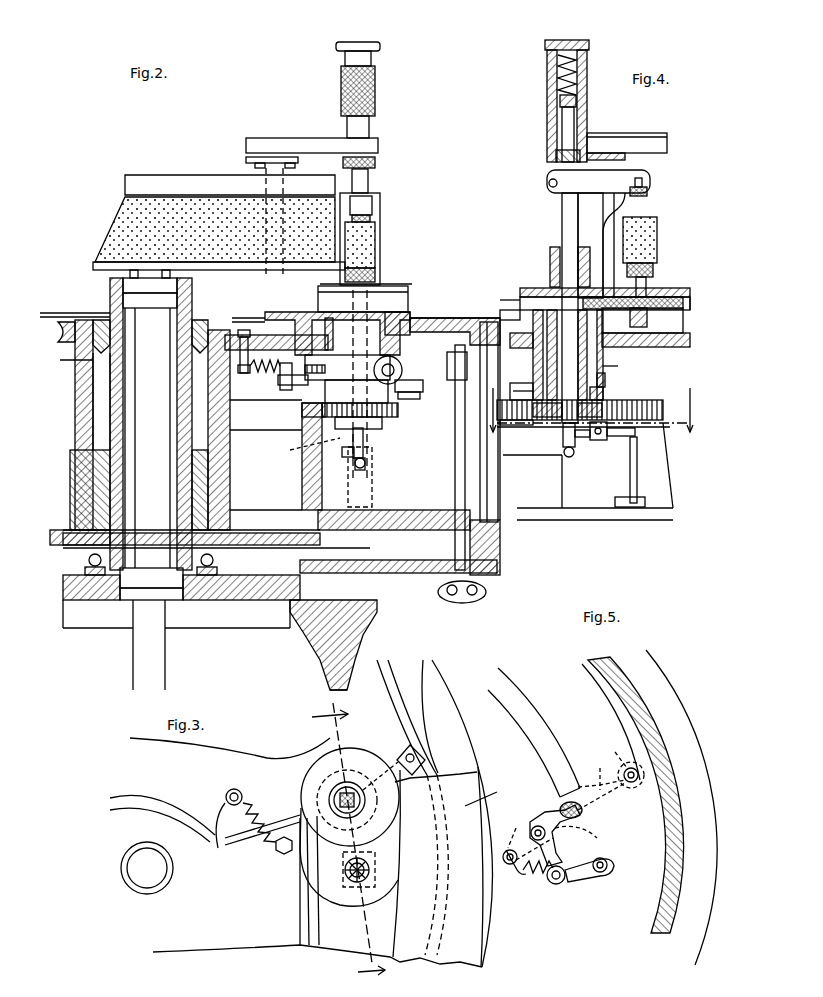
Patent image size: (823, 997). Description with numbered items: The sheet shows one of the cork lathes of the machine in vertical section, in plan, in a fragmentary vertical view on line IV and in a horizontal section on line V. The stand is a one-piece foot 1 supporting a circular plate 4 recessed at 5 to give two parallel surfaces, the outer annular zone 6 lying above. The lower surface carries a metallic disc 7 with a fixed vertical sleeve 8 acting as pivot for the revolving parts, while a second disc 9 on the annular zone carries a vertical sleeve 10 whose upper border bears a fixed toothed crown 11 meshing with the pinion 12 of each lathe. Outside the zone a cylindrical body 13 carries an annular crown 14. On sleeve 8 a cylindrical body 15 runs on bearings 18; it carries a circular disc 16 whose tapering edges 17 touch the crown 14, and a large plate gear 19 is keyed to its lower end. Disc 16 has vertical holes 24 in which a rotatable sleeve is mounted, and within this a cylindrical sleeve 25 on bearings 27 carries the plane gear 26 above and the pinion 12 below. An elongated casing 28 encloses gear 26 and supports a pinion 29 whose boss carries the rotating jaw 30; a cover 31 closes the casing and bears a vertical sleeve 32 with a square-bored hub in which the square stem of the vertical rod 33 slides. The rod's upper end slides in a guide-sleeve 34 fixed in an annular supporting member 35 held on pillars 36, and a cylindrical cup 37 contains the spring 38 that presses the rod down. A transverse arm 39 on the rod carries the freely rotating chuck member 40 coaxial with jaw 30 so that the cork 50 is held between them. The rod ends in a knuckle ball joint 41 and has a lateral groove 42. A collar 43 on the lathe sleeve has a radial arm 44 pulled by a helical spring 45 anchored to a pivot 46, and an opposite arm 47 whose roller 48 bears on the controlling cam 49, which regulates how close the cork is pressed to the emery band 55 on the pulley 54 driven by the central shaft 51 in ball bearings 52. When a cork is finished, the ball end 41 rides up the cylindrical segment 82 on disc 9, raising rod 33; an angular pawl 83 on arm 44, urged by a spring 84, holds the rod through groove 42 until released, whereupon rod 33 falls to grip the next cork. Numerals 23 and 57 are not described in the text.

In FIG. 2, the foot or sock 1 is at (352, 652).
In FIG. 2, the circular plate 4 is at (365, 615).
In FIG. 2, the central recess 5 is at (285, 628).
In FIG. 2, the outer annular zone 6 is at (505, 555).
In FIG. 2, the metallic disc 7 is at (240, 602).
In FIG. 2, the vertical sleeve 8 is at (190, 296).
In FIG. 2, the metallic disc 9 is at (418, 510).
In FIG. 4, the metallic disc 9 is at (602, 512).
In FIG. 2, the vertical sleeve 10 is at (312, 483).
In FIG. 2, the toothed crown 11 is at (275, 424).
In FIG. 4, the toothed crown 11 is at (658, 400).
In FIG. 2, the pinion 12 is at (378, 430).
In FIG. 4, the pinion 12 is at (540, 427).
In FIG. 2, the cylindrical body 13 is at (478, 368).
In FIG. 4, the cylindrical body 13 is at (500, 360).
In FIG. 3, the cylindrical body 13 is at (438, 716).
In FIG. 5, the cylindrical body 13 is at (678, 745).
In FIG. 2, the annular crown 14 is at (490, 305).
In FIG. 4, the annular crown 14 is at (497, 298).
In FIG. 3, the annular crown 14 is at (488, 791).
In FIG. 5, the annular crown 14 is at (478, 803).
In FIG. 2, the cylindrical body 15 is at (78, 427).
In FIG. 2, the circular disc 16 is at (305, 338).
In FIG. 4, the circular disc 16 is at (662, 348).
In FIG. 3, the circular disc 16 is at (168, 762).
In FIG. 2, the tapering edges 17 is at (480, 318).
In FIG. 4, the tapering edges 17 is at (502, 303).
In FIG. 2, the bearings 18 is at (95, 322).
In FIG. 2, the plate gear 19 is at (262, 540).
In FIG. 2, the base plate 23 is at (80, 600).
In FIG. 2, the vertical holes 24 is at (415, 302).
In FIG. 4, the vertical holes 24 is at (545, 340).
In FIG. 4, the cylindrical sleeve 25 is at (605, 378).
In FIG. 4, the plane gear 26 is at (530, 284).
In FIG. 4, the bearings 27 is at (535, 330).
In FIG. 2, the elongated casing 28 is at (410, 308).
In FIG. 4, the elongated casing 28 is at (520, 304).
In FIG. 4, the pinion 29 is at (665, 293).
In FIG. 2, the rotating jaw 30 is at (375, 273).
In FIG. 4, the rotating jaw 30 is at (653, 268).
In FIG. 3, the rotating jaw 30 is at (369, 866).
In FIG. 2, the cover 31 is at (408, 296).
In FIG. 4, the cover 31 is at (690, 290).
In FIG. 3, the cover 31 is at (330, 898).
In FIG. 4, the vertical sleeve 32 is at (552, 258).
In FIG. 3, the vertical sleeve 32 is at (328, 799).
In FIG. 2, the vertical rod 33 is at (368, 182).
In FIG. 4, the vertical rod 33 is at (560, 135).
In FIG. 3, the vertical rod 33 is at (365, 806).
In FIG. 5, the vertical rod 33 is at (582, 813).
In FIG. 2, the guide-sleeve 34 is at (375, 162).
In FIG. 4, the guide-sleeve 34 is at (556, 158).
In FIG. 2, the annular supporting member 35 is at (318, 138).
In FIG. 4, the annular supporting member 35 is at (620, 134).
In FIG. 2, the pillars 36 is at (298, 160).
In FIG. 4, the pillars 36 is at (578, 238).
In FIG. 2, the cylindrical cup 37 is at (376, 88).
In FIG. 4, the cylindrical cup 37 is at (547, 118).
In FIG. 4, the spring 38 is at (556, 68).
In FIG. 2, the transverse arm 39 is at (372, 206).
In FIG. 4, the transverse arm 39 is at (616, 205).
In FIG. 2, the chuck member 40 is at (370, 220).
In FIG. 4, the chuck member 40 is at (648, 192).
In FIG. 2, the knuckle ball joint 41 is at (370, 470).
In FIG. 4, the knuckle ball joint 41 is at (570, 458).
In FIG. 2, the groove 42 is at (342, 452).
In FIG. 5, the groove 42 is at (597, 832).
In FIG. 2, the collar 43 is at (404, 372).
In FIG. 4, the collar 43 is at (620, 364).
In FIG. 3, the collar 43 is at (303, 779).
In FIG. 2, the radial arm 44 is at (295, 385).
In FIG. 5, the radial arm 44 is at (610, 892).
In FIG. 2, the helical spring 45 is at (276, 372).
In FIG. 3, the helical spring 45 is at (265, 845).
In FIG. 2, the pivot 46 is at (247, 380).
In FIG. 3, the pivot 46 is at (236, 812).
In FIG. 2, the arm 47 is at (410, 392).
In FIG. 4, the arm 47 is at (520, 382).
In FIG. 3, the arm 47 is at (425, 787).
In FIG. 5, the arm 47 is at (601, 784).
In FIG. 2, the roller 48 is at (420, 399).
In FIG. 4, the roller 48 is at (518, 425).
In FIG. 3, the roller 48 is at (428, 766).
In FIG. 5, the roller 48 is at (618, 762).
In FIG. 2, the controlling cam 49 is at (465, 420).
In FIG. 3, the controlling cam 49 is at (400, 722).
In FIG. 5, the controlling cam 49 is at (618, 708).
In FIG. 2, the cork 50 is at (375, 248).
In FIG. 4, the cork 50 is at (657, 240).
In FIG. 2, the vertical shaft 51 is at (472, 392).
In FIG. 3, the vertical shaft 51 is at (145, 876).
In FIG. 2, the ball bearings 52 is at (128, 286).
In FIG. 2, the pulley or drum 54 is at (163, 180).
In FIG. 3, the pulley or drum 54 is at (262, 871).
In FIG. 2, the emery band 55 is at (190, 215).
In FIG. 3, the emery band 55 is at (315, 952).
In FIG. 2, the knob 57 is at (465, 452).
In FIG. 2, the cylindrical segment 82 is at (376, 492).
In FIG. 5, the cylindrical segment 82 is at (539, 732).
In FIG. 2, the angular pawl 83 is at (318, 445).
In FIG. 4, the angular pawl 83 is at (600, 441).
In FIG. 5, the angular pawl 83 is at (545, 818).
In FIG. 4, the spring 84 is at (636, 435).
In FIG. 5, the spring 84 is at (535, 874).
In FIG. 4, the section line V— V is at (594, 400).
In FIG. 3, the section line IV— IV is at (340, 844).